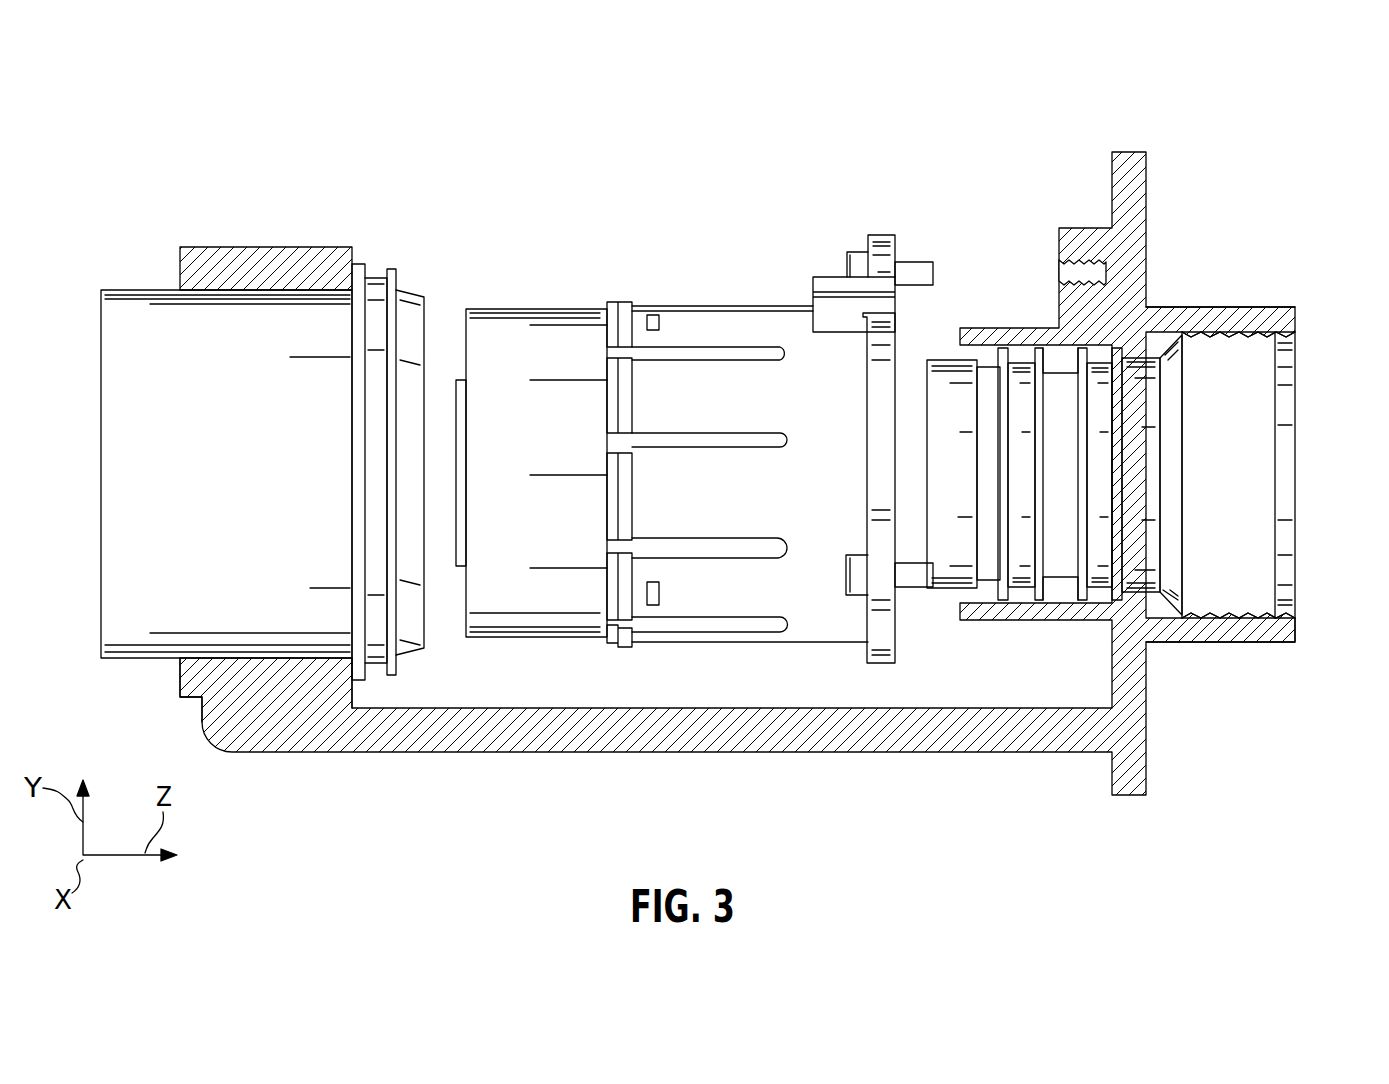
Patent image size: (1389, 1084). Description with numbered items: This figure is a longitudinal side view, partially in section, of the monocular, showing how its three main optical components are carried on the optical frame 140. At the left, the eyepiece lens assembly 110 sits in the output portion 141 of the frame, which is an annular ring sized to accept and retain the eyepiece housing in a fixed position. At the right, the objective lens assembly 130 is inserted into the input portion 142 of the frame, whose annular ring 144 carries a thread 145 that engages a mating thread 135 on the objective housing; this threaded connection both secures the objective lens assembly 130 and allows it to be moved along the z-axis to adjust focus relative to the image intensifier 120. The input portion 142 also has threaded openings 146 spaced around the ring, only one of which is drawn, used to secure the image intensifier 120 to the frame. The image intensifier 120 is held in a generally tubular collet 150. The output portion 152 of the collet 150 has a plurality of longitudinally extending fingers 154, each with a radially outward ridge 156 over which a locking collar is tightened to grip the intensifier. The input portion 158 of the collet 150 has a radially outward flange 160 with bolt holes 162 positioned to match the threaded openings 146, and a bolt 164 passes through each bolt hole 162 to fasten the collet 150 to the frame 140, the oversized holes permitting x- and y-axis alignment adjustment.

The eyepiece lens assembly 110 is at (145, 284).
The image intensifier 120 is at (520, 309).
The objective lens assembly 130 is at (1282, 383).
The mating thread 135 is at (1240, 620).
The optical frame 140 is at (1150, 748).
The output portion 141 is at (230, 246).
The input portion 142 is at (1178, 307).
The annular ring 144 is at (1247, 642).
The thread 145 is at (1257, 325).
The threaded opening 146 is at (1058, 272).
The collet 150 is at (712, 305).
The output portion 152 is at (598, 313).
The finger 154 is at (668, 306).
The ridge 156 is at (625, 300).
The input portion 158 is at (898, 235).
The flange 160 is at (862, 250).
The bolt hole 162 is at (897, 260).
The bolt 164 is at (857, 252).